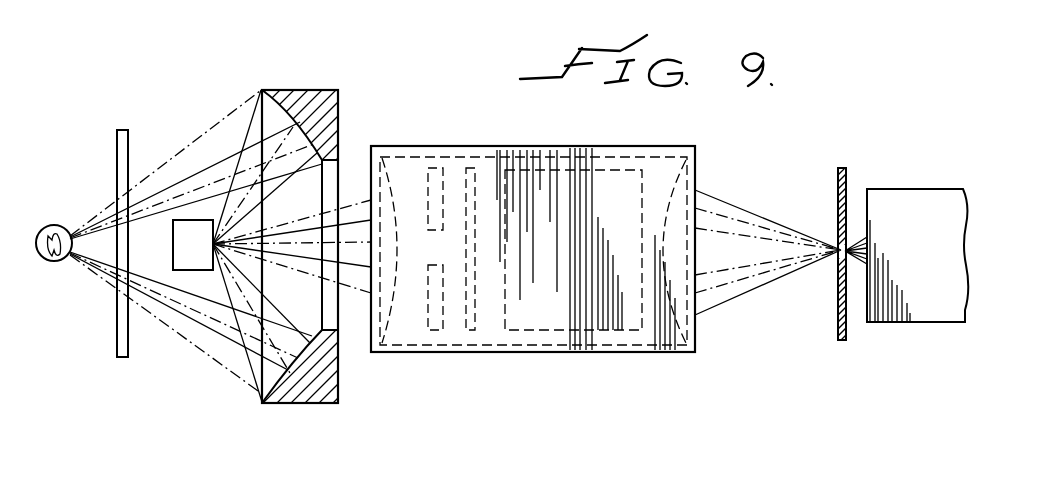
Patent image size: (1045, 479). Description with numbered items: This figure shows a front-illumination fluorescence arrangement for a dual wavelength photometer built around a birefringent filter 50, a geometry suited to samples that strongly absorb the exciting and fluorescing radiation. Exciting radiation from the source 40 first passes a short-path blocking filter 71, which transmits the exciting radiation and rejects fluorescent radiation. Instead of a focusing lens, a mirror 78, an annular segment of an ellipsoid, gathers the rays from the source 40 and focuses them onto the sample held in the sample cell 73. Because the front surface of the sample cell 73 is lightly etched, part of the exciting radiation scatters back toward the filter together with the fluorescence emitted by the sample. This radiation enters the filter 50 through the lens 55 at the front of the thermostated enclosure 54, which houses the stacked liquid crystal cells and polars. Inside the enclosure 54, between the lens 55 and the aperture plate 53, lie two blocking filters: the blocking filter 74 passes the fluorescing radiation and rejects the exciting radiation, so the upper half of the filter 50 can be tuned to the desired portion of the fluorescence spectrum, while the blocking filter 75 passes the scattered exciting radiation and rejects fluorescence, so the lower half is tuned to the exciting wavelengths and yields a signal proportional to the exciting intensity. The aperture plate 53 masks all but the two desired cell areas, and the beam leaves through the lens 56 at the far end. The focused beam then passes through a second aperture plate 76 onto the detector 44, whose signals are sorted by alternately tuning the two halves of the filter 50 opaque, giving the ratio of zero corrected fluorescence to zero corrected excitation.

The source 40 is at (61, 227).
The blocking filter 71 is at (117, 137).
The sample cell 73 is at (206, 261).
The mirror 78 is at (340, 105).
The birefringent filter 50 is at (668, 149).
The lens 55 is at (388, 172).
The blocking filter 74 is at (445, 166).
The blocking filter 75 is at (433, 328).
The thermostated enclosure 54 is at (600, 158).
The aperture plate 53 is at (475, 268).
The lens 56 is at (668, 205).
The aperture plate 76 is at (838, 178).
The detector 44 is at (910, 198).